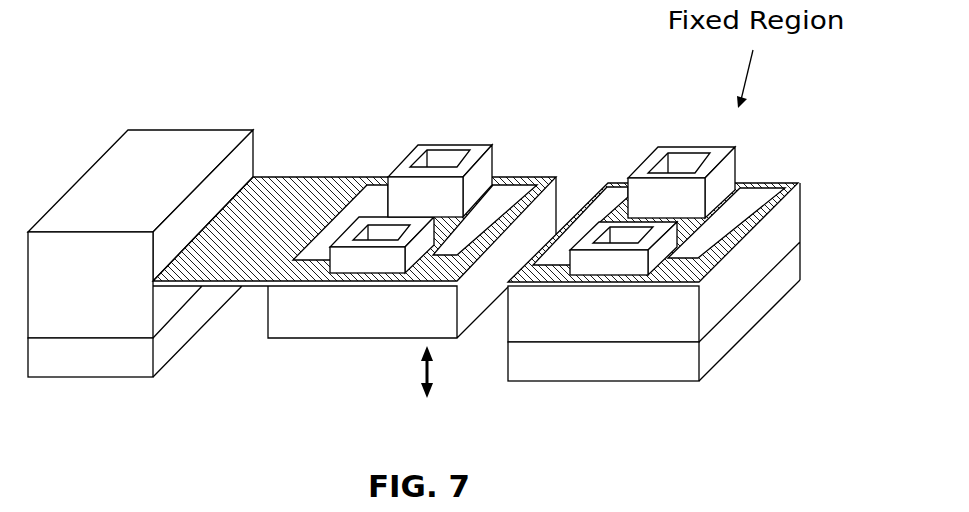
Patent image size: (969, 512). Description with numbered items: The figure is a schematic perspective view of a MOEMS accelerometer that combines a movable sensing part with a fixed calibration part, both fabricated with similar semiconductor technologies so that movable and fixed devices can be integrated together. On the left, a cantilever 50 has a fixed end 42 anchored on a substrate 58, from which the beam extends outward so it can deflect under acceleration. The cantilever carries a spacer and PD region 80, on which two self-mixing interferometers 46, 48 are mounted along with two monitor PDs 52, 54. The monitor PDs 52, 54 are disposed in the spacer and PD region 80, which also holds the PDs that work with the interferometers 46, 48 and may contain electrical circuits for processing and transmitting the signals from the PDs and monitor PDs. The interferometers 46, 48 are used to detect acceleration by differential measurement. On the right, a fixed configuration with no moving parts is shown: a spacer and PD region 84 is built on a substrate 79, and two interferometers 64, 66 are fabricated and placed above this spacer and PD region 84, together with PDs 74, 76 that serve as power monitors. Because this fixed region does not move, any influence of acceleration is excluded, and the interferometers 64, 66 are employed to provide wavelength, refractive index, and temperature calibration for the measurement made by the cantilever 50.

The fixed end 42 is at (140, 234).
The substrate 58 is at (90, 357).
The cantilever 50 is at (370, 192).
The spacer and PD region 80 is at (330, 331).
The interferometer 46 is at (382, 245).
The interferometer 48 is at (440, 181).
The monitor PD 52 is at (385, 214).
The monitor PD 54 is at (486, 210).
The spacer and PD region 84 is at (654, 262).
The substrate 79 is at (654, 330).
The interferometer 64 is at (623, 248).
The interferometer 66 is at (681, 182).
The PD 74 is at (627, 219).
The PD 76 is at (724, 206).